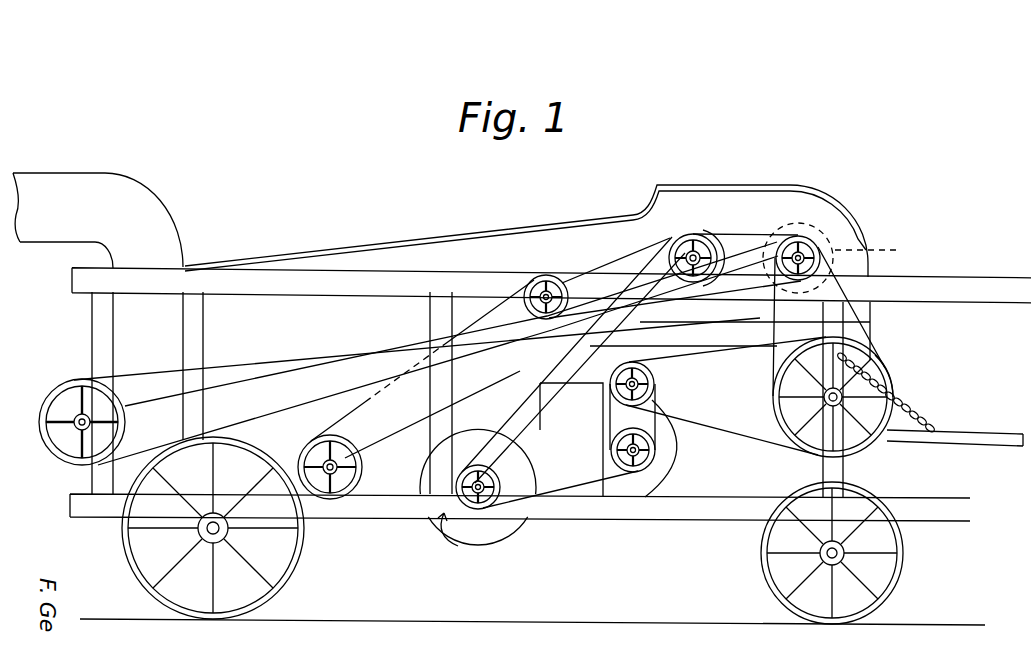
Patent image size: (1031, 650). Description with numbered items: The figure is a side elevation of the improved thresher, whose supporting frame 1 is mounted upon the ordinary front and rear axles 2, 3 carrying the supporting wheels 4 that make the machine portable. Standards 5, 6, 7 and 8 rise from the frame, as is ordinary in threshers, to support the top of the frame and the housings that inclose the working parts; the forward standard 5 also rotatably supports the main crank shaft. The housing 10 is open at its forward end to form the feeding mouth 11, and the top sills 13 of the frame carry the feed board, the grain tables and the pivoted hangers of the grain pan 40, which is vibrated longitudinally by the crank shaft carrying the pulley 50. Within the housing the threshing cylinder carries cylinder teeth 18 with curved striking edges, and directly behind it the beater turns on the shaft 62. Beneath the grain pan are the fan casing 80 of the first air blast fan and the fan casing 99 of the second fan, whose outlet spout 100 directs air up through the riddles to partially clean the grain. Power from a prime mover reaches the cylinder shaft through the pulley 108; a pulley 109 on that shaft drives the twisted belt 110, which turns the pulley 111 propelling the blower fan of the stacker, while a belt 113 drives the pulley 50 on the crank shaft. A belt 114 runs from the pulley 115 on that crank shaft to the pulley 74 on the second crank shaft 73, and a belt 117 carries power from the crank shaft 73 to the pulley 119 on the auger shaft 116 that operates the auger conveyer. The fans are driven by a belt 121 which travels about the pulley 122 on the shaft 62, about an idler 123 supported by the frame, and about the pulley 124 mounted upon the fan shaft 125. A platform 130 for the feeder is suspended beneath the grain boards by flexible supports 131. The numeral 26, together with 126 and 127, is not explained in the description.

The supporting frame 1 is at (440, 522).
The front axle 2 is at (826, 556).
The rear axle 3 is at (220, 533).
The supporting wheels 4 is at (305, 540).
The standard 5 is at (811, 240).
The standard 6 is at (607, 432).
The standard 7 is at (432, 470).
The standard 8 is at (183, 343).
The housing 10 is at (604, 218).
The mouth 11 is at (870, 248).
The top sills 13 is at (982, 287).
The cylinder teeth 18 is at (757, 237).
The discharge chute 26 is at (118, 319).
The grain pan 40 is at (898, 395).
The pulley 50 is at (892, 385).
The shaft 62 is at (696, 254).
The crank shaft 73 is at (573, 277).
The pulley 74 is at (536, 288).
The fan casing 80 is at (466, 530).
The fan casing 99 is at (662, 478).
The spout 100 is at (585, 413).
The pulley 108 is at (884, 252).
The pulley 109 is at (806, 237).
The twisted belt 110 is at (366, 346).
The pulley 111 is at (58, 390).
The belt 113 is at (858, 322).
The belt 114 is at (775, 398).
The pulley 115 is at (787, 425).
The shaft 116 is at (345, 500).
The belt 117 is at (422, 360).
The pulley 119 is at (360, 463).
The belt 121 is at (551, 500).
The pulley 122 is at (692, 236).
The idler 123 is at (655, 393).
The pulley 124 is at (712, 250).
The shaft 125 is at (628, 475).
The fan pulley 126 is at (482, 510).
The fan belt 127 is at (502, 487).
The platform 130 is at (1006, 444).
The flexible supports 131 is at (937, 428).